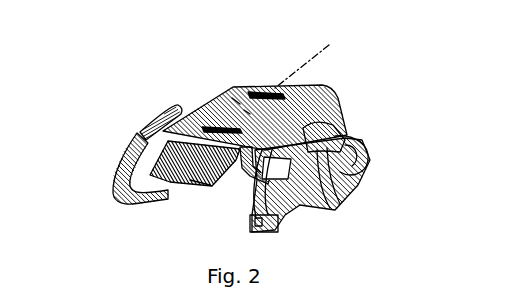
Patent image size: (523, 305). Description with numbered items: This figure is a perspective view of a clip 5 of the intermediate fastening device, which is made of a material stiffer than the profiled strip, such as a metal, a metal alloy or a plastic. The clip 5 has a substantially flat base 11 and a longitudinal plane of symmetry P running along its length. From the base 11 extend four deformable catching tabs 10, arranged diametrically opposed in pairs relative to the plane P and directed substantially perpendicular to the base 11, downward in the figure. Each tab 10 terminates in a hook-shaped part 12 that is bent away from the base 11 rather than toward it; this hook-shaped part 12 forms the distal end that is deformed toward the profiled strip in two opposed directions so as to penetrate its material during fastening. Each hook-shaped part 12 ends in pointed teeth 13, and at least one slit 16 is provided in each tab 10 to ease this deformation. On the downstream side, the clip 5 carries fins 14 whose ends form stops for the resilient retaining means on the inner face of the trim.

The clip 5 is at (137, 69).
The deformable catching tabs 10 is at (333, 100).
The base 11 is at (233, 87).
The hook-shaped part 12 is at (133, 180).
The pointed teeth 13 is at (147, 206).
The fins 14 is at (137, 130).
The slit 16 is at (352, 146).
The longitudinal plane of symmetry P is at (329, 45).